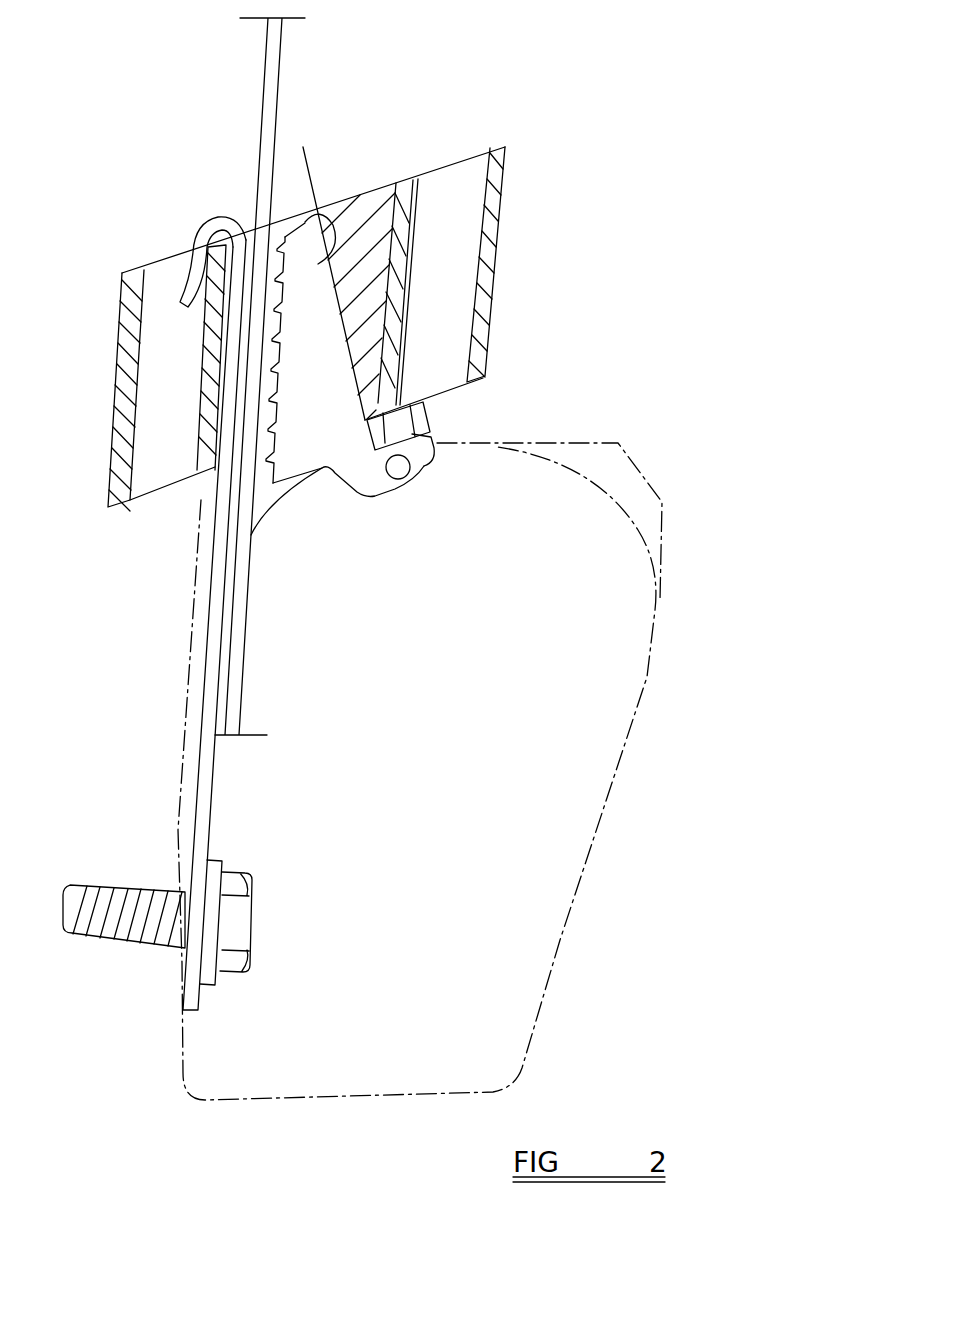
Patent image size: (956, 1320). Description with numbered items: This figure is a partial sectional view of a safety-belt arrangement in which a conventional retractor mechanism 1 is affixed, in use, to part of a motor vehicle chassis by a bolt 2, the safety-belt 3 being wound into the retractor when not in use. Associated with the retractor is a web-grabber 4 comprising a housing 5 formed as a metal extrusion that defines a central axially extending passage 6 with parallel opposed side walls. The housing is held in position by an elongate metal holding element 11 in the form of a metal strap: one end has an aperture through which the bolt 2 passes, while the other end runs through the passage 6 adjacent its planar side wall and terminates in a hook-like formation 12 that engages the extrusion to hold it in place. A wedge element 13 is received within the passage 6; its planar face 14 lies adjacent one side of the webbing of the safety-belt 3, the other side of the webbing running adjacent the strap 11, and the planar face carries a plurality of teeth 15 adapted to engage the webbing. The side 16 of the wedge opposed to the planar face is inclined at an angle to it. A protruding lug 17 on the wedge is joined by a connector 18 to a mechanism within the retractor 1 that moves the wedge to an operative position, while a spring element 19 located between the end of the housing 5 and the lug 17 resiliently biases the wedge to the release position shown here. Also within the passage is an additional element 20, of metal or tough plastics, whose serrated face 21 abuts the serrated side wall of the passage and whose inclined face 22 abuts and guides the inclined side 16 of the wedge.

The retractor mechanism 1 is at (548, 852).
The bolt 2 is at (105, 950).
The safety-belt 3 is at (282, 83).
The web-grabber 4 is at (608, 234).
The housing 5 is at (500, 145).
The central axially extending passage 6 is at (345, 182).
The elongate metal holding element 11 is at (215, 630).
The hook-like formation 12 is at (215, 213).
The wedge element 13 is at (332, 394).
The planar face 14 is at (280, 344).
The teeth 15 is at (266, 455).
The inclined side of the wedge 16 is at (350, 327).
The protruding lug 17 is at (422, 468).
The connector 18 is at (398, 479).
The spring element 19 is at (420, 435).
The additional element 20 is at (375, 195).
The serrated face 21 is at (416, 223).
The inclined face 22 is at (303, 160).